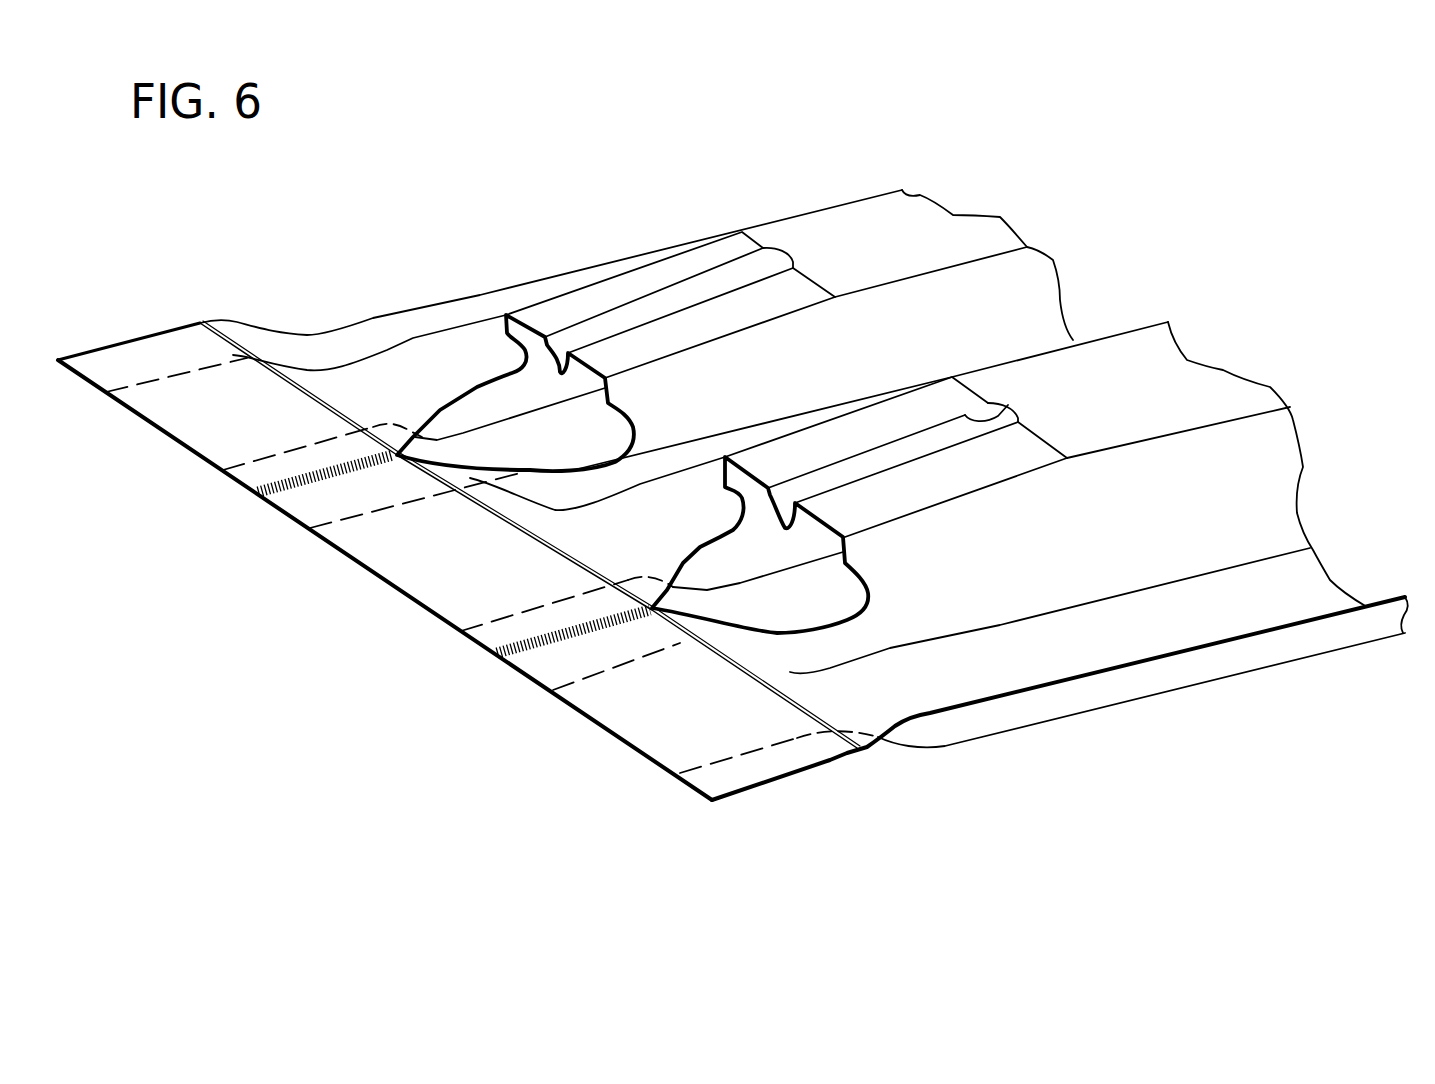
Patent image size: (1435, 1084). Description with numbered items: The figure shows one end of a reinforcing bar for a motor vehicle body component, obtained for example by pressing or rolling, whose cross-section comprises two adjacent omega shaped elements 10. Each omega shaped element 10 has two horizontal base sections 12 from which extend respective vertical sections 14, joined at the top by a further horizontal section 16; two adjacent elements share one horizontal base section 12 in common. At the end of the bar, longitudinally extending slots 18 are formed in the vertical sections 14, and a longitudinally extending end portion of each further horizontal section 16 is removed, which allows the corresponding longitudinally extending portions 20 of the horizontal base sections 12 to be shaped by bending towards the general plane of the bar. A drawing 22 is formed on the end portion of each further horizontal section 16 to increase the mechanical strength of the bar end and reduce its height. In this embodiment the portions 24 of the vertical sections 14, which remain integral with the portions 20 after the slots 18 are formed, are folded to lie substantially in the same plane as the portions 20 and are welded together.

The omega shaped element 10 is at (1005, 217).
The horizontal base section 12 is at (373, 577).
The vertical section 14 is at (1277, 487).
The further horizontal section 16 is at (532, 327).
The longitudinally extending slot 18 is at (640, 437).
The longitudinally extending portion of the horizontal base section 20 is at (747, 735).
The drawing 22 is at (709, 270).
The portion of the vertical section 24 is at (293, 510).